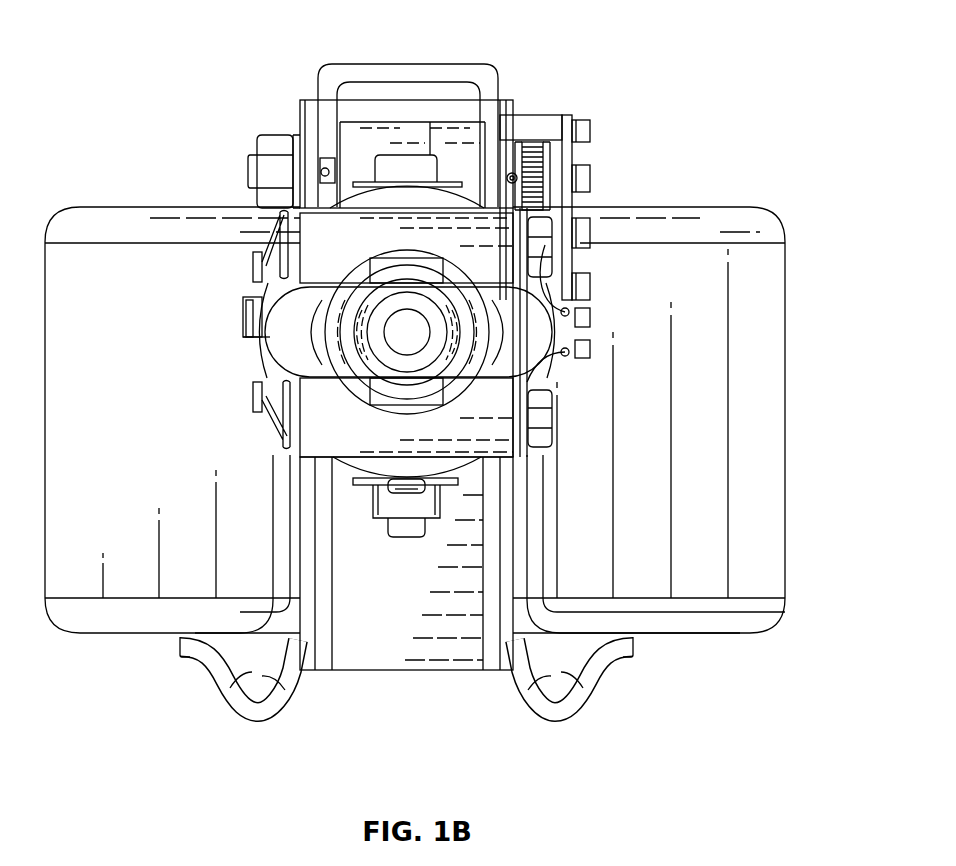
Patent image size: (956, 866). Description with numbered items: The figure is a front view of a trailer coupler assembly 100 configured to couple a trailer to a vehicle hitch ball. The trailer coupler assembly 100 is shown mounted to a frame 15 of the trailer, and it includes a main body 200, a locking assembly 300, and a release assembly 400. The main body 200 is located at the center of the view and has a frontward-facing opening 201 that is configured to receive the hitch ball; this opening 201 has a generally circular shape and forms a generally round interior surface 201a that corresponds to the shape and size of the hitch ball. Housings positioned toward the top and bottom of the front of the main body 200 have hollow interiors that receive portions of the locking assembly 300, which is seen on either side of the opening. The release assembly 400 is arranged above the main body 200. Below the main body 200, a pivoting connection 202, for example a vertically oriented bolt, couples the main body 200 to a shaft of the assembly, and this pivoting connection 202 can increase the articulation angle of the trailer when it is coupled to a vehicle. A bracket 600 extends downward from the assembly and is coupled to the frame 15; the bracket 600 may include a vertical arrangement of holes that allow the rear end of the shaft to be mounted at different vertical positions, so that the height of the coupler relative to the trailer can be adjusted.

The trailer coupler assembly 100 is at (436, 372).
The frame 15 is at (760, 226).
The main body 200 is at (328, 342).
The frontward-facing opening 201 is at (318, 336).
The interior surface 201a is at (335, 318).
The pivoting connection 202 is at (408, 538).
The locking assembly 300 is at (542, 245).
The release assembly 400 is at (453, 142).
The bracket 600 is at (406, 593).